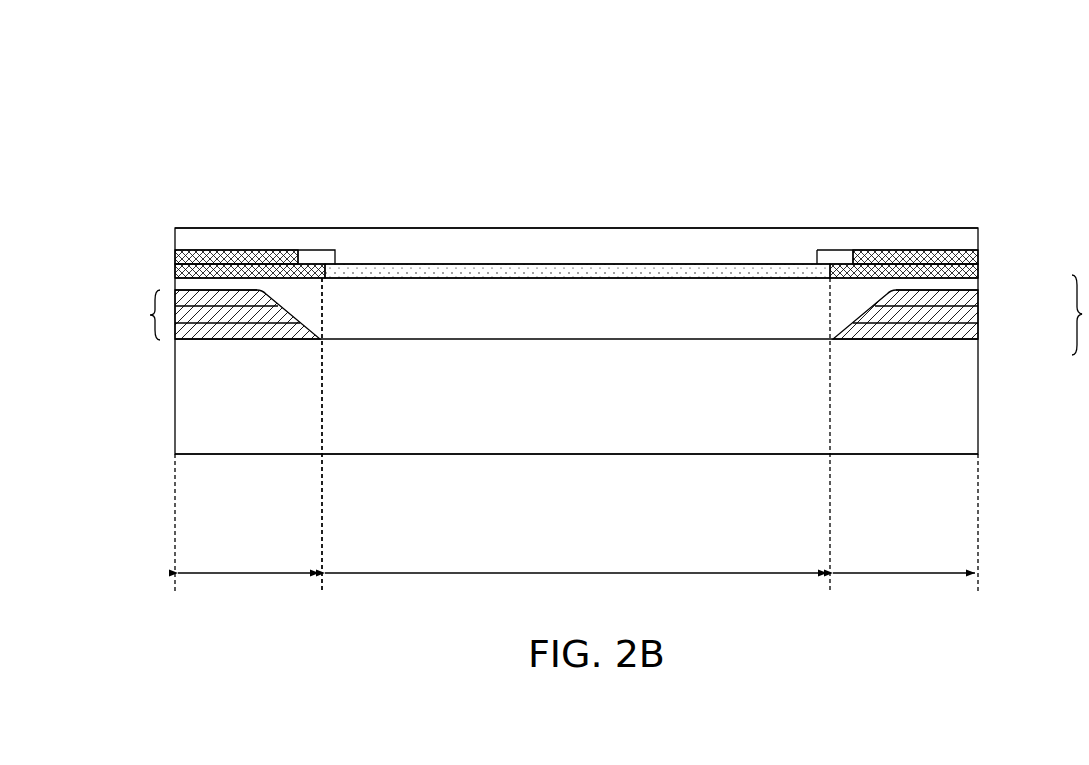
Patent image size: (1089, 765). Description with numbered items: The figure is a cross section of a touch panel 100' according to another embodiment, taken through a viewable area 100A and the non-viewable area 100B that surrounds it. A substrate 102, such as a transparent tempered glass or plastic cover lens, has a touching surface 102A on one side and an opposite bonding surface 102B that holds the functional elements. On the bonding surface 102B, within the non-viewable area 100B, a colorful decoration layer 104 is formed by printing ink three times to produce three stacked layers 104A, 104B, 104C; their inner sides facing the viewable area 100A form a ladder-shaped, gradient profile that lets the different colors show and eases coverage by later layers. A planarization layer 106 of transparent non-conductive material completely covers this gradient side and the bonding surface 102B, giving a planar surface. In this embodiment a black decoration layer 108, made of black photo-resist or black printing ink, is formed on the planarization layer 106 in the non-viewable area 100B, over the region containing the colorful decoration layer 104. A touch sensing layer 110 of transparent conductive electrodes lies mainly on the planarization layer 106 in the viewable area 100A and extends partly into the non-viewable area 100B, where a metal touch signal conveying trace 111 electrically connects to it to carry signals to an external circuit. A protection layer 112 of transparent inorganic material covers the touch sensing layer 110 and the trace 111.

The touch panel 100' is at (860, 69).
The substrate 102 is at (955, 402).
The touching surface 102A is at (366, 458).
The bonding surface 102B is at (380, 336).
The colorful decoration layer 104 is at (598, 315).
The first layer of colorful decoration layer 104A is at (980, 339).
The second layer of colorful decoration layer 104B is at (980, 316).
The third layer of colorful decoration layer 104C is at (980, 296).
The planarization layer 106 is at (980, 249).
The black decoration layer 108 is at (232, 252).
The touch sensing layer 110 is at (559, 268).
The touch signal conveying trace 111 is at (268, 252).
The protection layer 112 is at (688, 236).
The viewable area 100A is at (576, 560).
The non-viewable area 100B is at (576, 560).